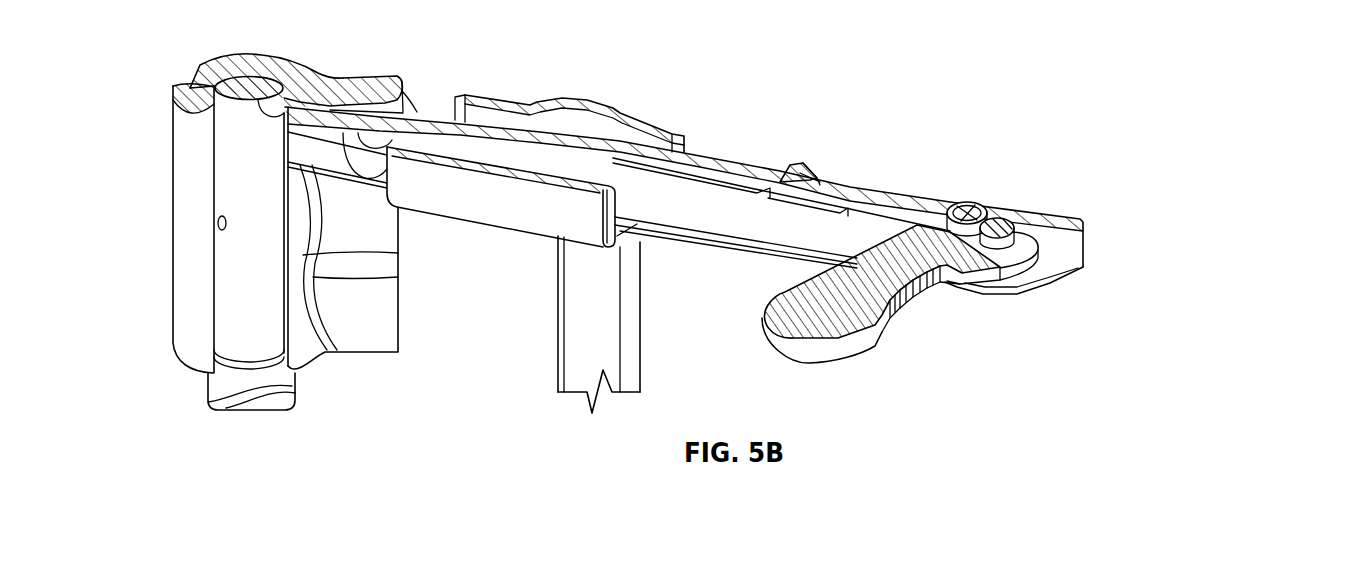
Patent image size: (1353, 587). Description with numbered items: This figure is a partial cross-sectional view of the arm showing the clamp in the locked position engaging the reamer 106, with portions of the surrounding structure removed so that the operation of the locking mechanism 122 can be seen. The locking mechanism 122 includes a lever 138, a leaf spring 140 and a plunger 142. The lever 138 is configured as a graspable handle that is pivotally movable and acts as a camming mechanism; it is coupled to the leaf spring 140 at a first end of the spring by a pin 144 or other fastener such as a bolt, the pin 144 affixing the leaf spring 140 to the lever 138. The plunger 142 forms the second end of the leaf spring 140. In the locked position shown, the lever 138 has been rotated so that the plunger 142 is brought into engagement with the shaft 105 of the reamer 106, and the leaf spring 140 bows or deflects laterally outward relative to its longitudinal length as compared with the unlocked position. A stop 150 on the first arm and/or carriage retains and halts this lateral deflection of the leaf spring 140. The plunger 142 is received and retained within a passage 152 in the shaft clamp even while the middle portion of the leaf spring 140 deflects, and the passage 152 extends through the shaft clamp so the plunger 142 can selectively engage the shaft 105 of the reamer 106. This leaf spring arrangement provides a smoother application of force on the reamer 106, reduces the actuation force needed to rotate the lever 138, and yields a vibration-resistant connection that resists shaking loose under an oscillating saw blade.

The shaft 105 is at (223, 276).
The reamer 106 is at (165, 244).
The locking mechanism 122 is at (828, 155).
The lever 138 is at (857, 350).
The leaf spring 140 is at (743, 164).
The plunger 142 is at (318, 100).
The pin 144 is at (967, 210).
The stop 150 is at (797, 164).
The passage 152 is at (398, 82).